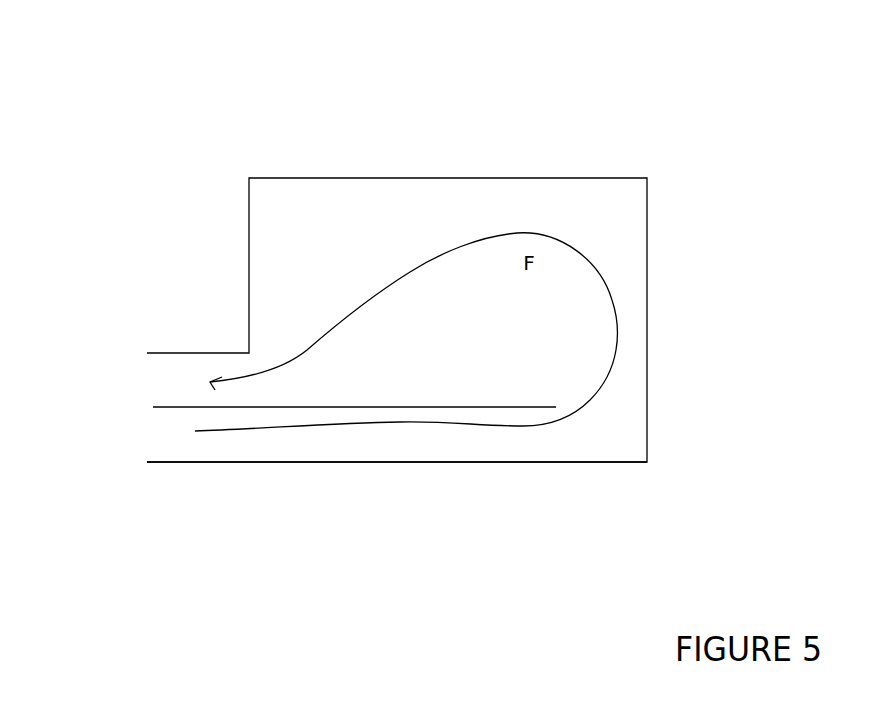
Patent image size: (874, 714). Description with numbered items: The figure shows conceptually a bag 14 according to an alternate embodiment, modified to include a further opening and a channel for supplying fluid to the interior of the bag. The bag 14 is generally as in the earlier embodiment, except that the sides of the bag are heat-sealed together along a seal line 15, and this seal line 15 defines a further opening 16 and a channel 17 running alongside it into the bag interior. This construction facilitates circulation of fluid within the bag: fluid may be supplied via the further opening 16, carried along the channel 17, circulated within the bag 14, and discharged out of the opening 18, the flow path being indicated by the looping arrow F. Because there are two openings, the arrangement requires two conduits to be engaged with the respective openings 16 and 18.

The bag 14 is at (492, 158).
The seal line 15 is at (384, 407).
The further opening 16 is at (148, 436).
The channel 17 is at (329, 435).
The opening 18 is at (153, 383).